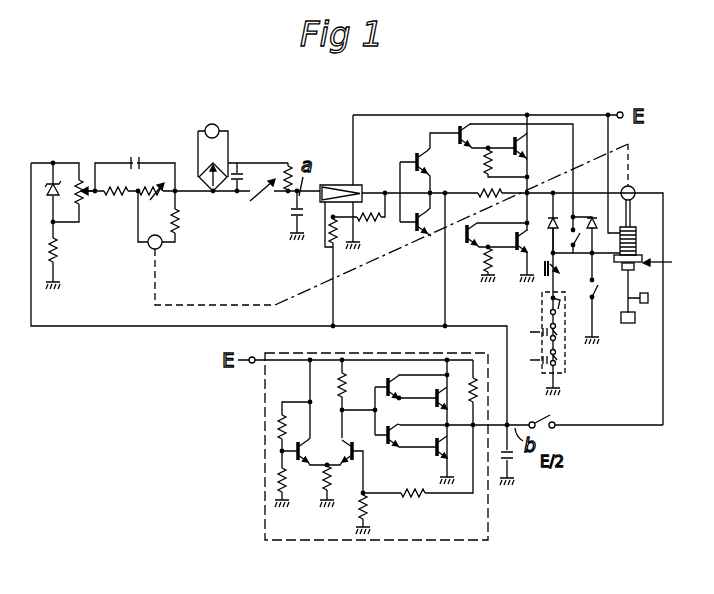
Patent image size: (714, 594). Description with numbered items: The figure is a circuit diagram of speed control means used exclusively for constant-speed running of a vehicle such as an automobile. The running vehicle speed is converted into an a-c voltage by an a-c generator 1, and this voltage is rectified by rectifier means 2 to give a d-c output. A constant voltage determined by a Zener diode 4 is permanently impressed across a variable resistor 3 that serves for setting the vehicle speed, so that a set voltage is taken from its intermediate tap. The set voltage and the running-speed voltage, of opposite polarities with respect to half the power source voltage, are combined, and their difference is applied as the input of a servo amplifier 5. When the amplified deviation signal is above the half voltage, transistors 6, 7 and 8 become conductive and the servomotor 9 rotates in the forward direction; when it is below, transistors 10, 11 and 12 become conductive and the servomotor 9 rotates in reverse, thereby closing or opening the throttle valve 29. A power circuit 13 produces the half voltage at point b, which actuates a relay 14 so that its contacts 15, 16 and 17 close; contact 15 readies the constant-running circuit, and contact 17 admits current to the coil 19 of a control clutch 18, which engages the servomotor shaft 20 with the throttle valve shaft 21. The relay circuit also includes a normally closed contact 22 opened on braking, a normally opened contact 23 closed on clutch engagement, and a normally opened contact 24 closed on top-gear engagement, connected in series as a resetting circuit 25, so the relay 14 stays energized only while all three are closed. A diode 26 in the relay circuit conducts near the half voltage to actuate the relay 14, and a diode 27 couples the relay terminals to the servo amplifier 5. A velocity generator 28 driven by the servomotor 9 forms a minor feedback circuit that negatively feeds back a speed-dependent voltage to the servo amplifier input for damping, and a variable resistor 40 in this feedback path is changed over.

The a-c generator 1 is at (212, 124).
The rectifier means 2 is at (198, 180).
The variable resistor 3 is at (97, 194).
The Zener diode 4 is at (50, 196).
The servo amplifier 5 is at (331, 185).
The transistor 6 is at (428, 162).
The transistor 7 is at (488, 150).
The transistor 8 is at (529, 142).
The servomotor 9 is at (634, 187).
The transistor 10 is at (406, 219).
The transistor 11 is at (490, 252).
The transistor 12 is at (514, 251).
The power circuit 13 is at (265, 427).
The relay 14 is at (556, 270).
The contact 15 is at (548, 419).
The contact 16 is at (578, 252).
The contact 17 is at (597, 291).
The control clutch 18 is at (697, 269).
The coil 19 is at (641, 238).
The servomotor shaft 20 is at (633, 212).
The throttle valve shaft 21 is at (636, 292).
The normally closed contact 22 is at (537, 307).
The normally opened contact 23 is at (533, 335).
The normally opened contact 24 is at (534, 373).
The resetting circuit 25 is at (565, 358).
The diode 26 is at (545, 222).
The diode 27 is at (588, 237).
The velocity generator 28 is at (149, 249).
The throttle valve 29 is at (629, 324).
The variable resistor 40 is at (152, 201).